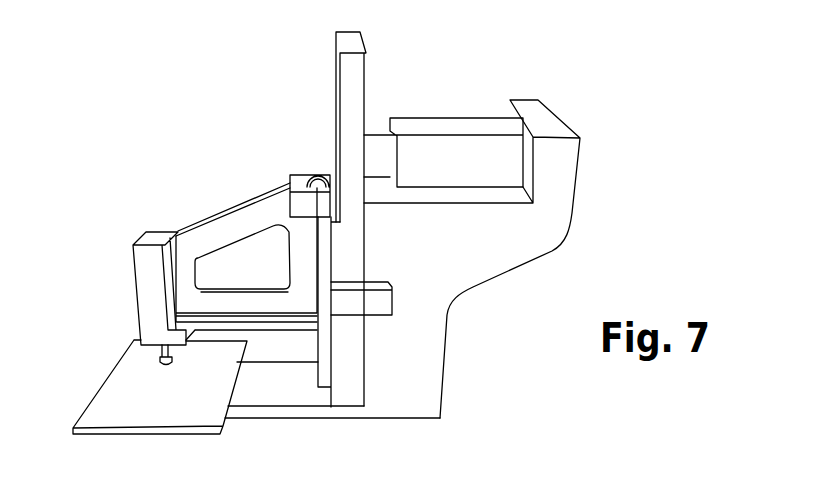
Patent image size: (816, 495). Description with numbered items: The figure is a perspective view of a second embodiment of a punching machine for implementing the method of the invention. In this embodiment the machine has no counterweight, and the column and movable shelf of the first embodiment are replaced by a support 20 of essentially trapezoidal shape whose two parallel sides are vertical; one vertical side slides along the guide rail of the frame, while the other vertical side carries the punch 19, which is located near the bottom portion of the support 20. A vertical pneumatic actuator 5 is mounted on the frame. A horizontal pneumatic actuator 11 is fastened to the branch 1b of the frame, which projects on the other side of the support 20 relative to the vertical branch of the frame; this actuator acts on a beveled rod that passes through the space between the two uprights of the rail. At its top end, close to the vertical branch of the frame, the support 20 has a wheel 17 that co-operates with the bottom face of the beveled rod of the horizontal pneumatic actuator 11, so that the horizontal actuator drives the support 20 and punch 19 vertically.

The pneumatic actuator 5 is at (374, 75).
The horizontal pneumatic actuator 11 is at (440, 157).
The wheel 17 is at (313, 175).
The support 20 is at (230, 220).
The punch 19 is at (160, 362).
The branch of the frame 1b is at (477, 228).